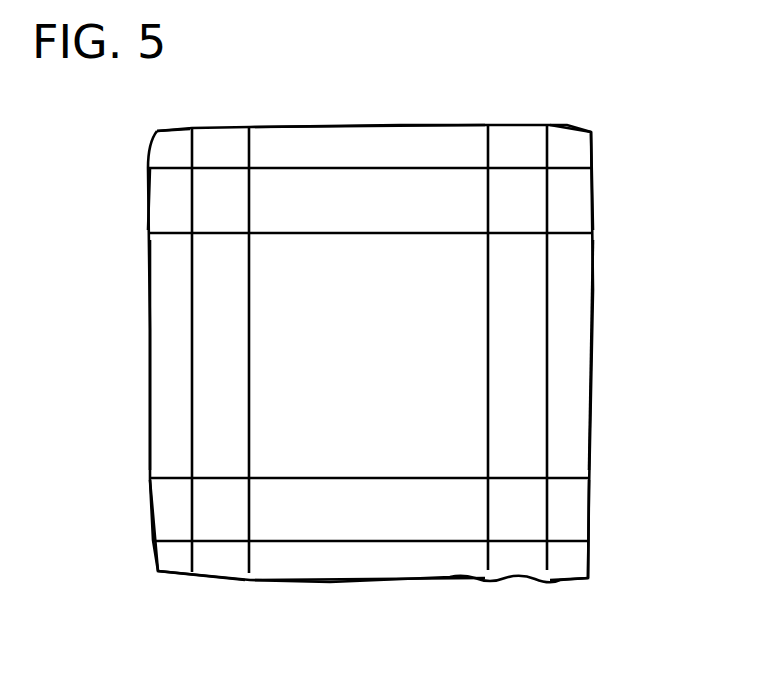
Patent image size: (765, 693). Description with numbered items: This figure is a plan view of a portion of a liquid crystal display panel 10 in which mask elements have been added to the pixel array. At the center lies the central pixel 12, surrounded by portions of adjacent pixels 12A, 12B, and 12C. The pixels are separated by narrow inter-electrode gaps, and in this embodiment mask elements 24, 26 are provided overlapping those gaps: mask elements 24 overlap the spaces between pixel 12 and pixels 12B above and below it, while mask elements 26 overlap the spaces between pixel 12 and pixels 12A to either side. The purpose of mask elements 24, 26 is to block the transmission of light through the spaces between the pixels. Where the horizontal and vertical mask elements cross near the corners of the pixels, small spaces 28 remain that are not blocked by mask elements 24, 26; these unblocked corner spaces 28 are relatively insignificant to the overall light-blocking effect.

The bulk acoustic wave device 10 is at (92, 451).
The central pixel 12 is at (389, 372).
The adjacent pixel 12A is at (160, 333).
The adjacent pixel 12B is at (305, 126).
The adjacent pixel 12C is at (172, 143).
The mask element 24 is at (405, 196).
The mask element 26 is at (218, 130).
The small spaces 28 is at (237, 217).